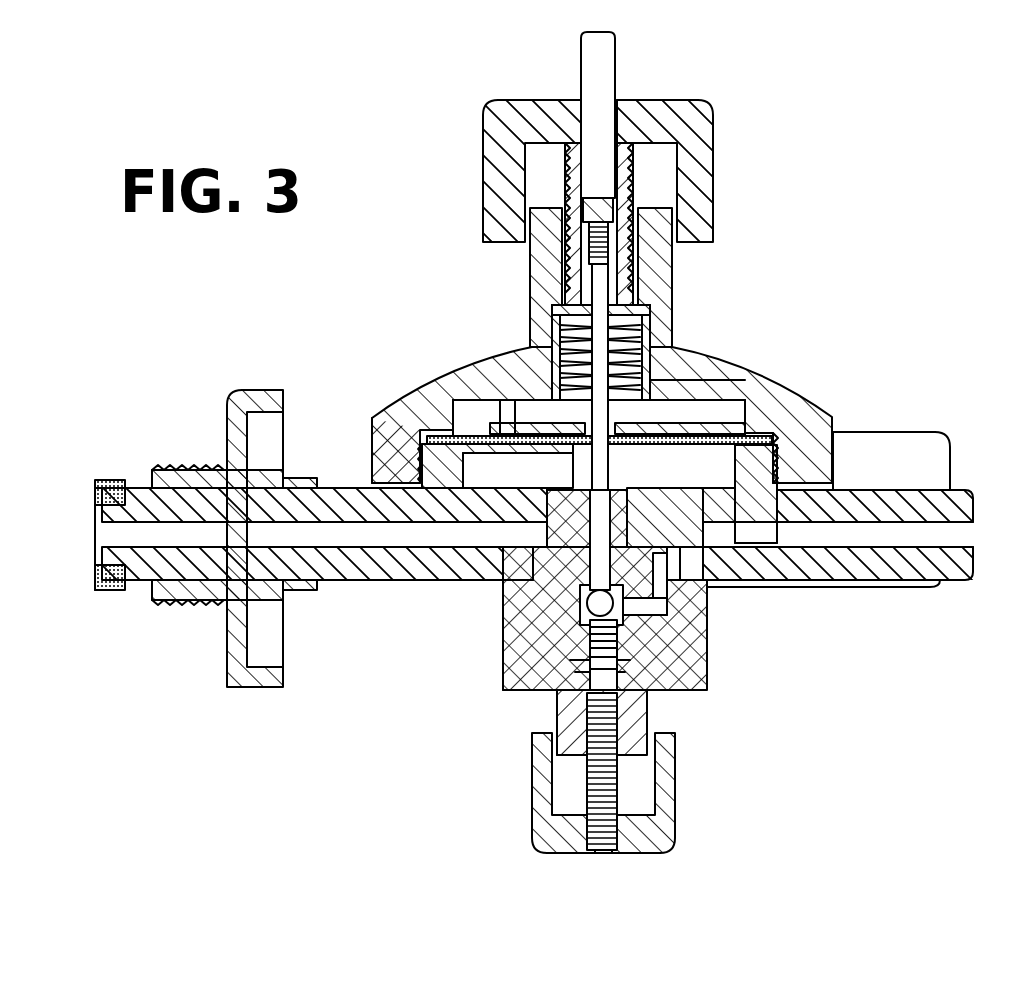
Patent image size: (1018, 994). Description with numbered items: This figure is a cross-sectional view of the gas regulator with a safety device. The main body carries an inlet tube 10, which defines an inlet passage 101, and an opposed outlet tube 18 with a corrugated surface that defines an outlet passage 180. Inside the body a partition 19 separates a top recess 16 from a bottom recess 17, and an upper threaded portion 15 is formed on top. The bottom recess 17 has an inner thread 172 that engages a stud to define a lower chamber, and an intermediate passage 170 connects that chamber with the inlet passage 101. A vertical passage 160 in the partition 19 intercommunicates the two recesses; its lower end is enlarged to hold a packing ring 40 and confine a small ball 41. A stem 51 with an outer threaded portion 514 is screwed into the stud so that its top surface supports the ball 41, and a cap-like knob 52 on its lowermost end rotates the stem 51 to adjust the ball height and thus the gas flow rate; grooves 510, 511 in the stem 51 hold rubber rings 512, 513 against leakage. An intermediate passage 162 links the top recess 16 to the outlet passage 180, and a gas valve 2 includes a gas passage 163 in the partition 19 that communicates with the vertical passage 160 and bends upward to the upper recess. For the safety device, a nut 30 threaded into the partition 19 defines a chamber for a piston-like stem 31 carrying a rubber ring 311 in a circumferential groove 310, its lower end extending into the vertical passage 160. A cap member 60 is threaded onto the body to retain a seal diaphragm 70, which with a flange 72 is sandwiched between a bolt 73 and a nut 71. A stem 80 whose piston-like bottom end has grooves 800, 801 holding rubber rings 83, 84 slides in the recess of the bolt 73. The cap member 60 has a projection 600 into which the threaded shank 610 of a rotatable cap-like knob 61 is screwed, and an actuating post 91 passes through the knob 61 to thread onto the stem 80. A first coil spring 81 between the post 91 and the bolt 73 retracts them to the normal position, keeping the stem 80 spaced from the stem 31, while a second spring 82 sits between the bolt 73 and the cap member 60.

The gas valve 2 is at (640, 492).
The inlet tube 10 is at (358, 582).
The upper threaded portion 15 is at (400, 430).
The top recess 16 is at (465, 415).
The bottom recess 17 is at (575, 672).
The outlet tube 18 is at (912, 570).
The partition 19 is at (373, 417).
The nut 30 is at (573, 485).
The piston-like stem 31 is at (540, 595).
The packing ring 40 is at (605, 608).
The small ball 41 is at (615, 630).
The stem 51 is at (545, 740).
The cap-like knob 52 is at (668, 838).
The cap member 60 is at (820, 418).
The cap-like knob 61 is at (722, 137).
The seal diaphragm 70 is at (445, 436).
The nut 71 is at (515, 395).
The flange 72 is at (512, 405).
The bolt 73 is at (545, 400).
The stem 80 is at (640, 295).
The first coil spring 81 is at (640, 290).
The second spring 82 is at (575, 372).
The rubber ring 83 is at (690, 448).
The rubber ring 84 is at (700, 430).
The actuating post 91 is at (610, 67).
The inlet passage 101 is at (337, 533).
The vertical passage 160 is at (560, 610).
The intermediate passage 162 is at (757, 545).
The gas passage 163 is at (705, 590).
The intermediate passage 170 is at (520, 582).
The inner thread 172 is at (570, 660).
The outlet passage 180 is at (943, 530).
The circumferential groove 310 is at (495, 578).
The rubber ring 311 is at (450, 578).
The groove 510 is at (612, 688).
The groove 511 is at (620, 665).
The rubber ring 512 is at (600, 690).
The rubber ring 513 is at (595, 650).
The outer threaded portion 514 is at (617, 783).
The projection 600 is at (640, 305).
The threaded shank 610 is at (637, 160).
The groove 800 is at (775, 450).
The groove 801 is at (678, 385).